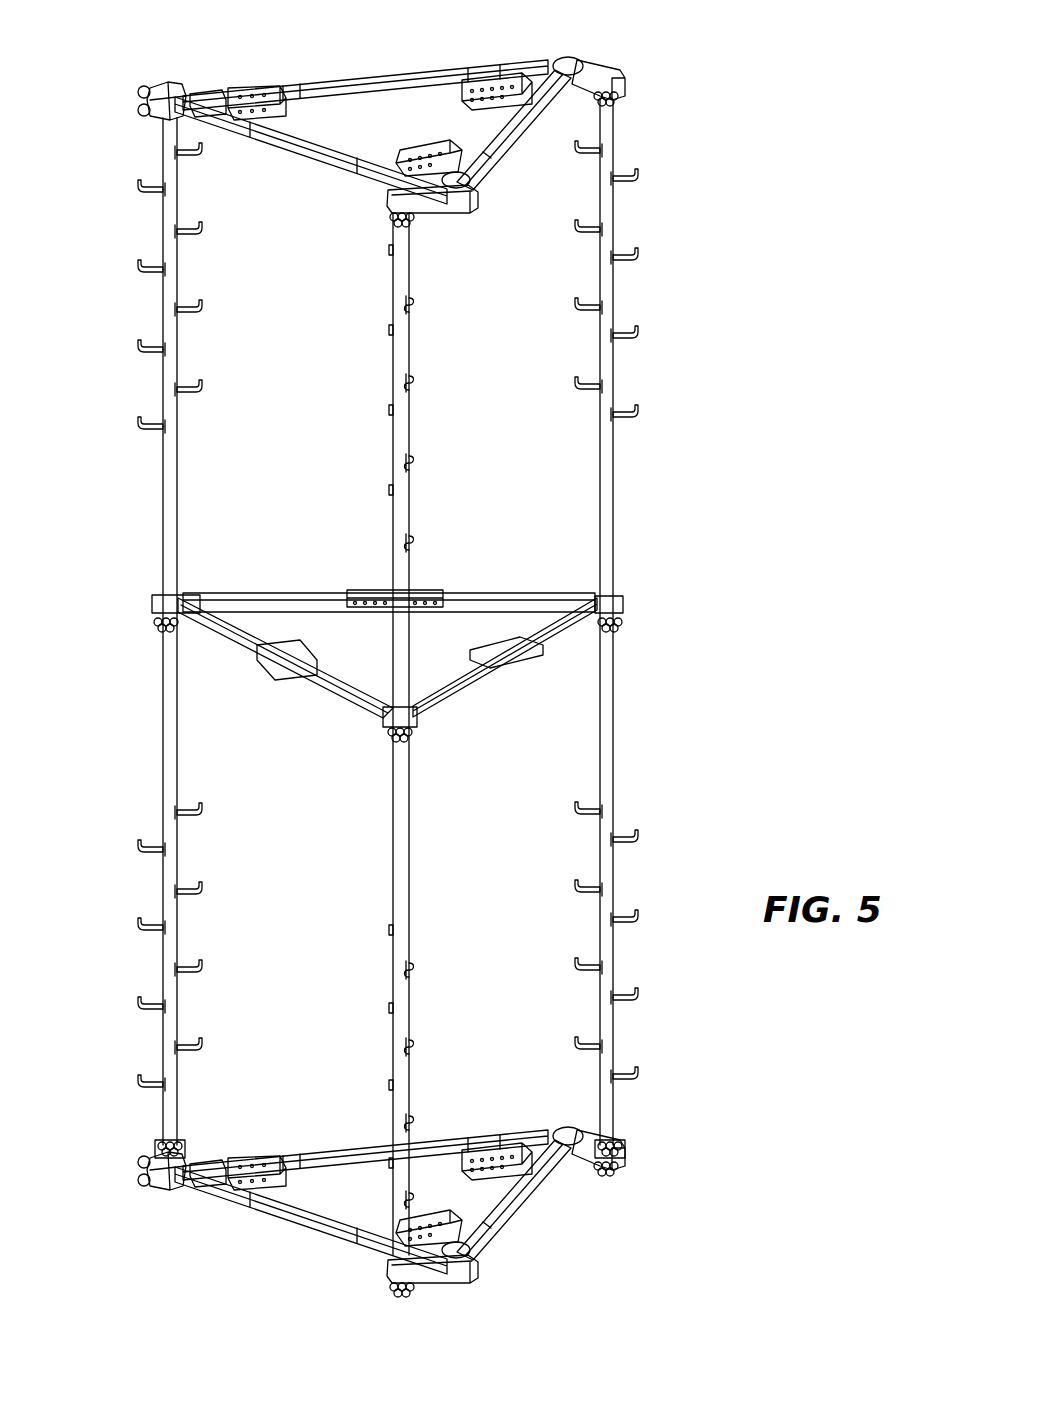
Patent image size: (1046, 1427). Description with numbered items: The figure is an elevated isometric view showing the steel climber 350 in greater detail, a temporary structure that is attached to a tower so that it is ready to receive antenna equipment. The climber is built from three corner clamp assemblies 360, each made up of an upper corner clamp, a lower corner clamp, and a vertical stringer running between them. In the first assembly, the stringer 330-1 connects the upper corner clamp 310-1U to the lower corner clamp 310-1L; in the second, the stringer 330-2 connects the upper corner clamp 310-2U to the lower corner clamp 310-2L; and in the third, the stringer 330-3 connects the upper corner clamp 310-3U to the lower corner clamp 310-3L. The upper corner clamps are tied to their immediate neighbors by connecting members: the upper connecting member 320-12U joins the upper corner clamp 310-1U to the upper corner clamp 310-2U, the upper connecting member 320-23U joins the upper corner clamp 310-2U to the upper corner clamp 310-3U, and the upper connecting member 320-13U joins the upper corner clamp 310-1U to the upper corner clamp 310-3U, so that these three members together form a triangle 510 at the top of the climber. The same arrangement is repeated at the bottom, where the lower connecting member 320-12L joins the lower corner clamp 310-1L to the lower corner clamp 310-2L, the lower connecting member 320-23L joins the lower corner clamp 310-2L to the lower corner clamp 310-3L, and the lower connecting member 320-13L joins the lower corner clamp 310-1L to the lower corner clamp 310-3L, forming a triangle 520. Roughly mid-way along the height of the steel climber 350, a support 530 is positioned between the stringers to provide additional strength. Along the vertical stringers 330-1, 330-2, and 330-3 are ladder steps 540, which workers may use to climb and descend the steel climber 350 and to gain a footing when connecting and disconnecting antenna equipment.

The steel climber 350 is at (722, 143).
The corner clamp assembly 360 is at (88, 712).
The triangle 510 is at (364, 129).
The triangle 520 is at (389, 1196).
The support 530 is at (522, 684).
The ladder steps 540 is at (200, 310).
The stringer 330-1 is at (165, 482).
The stringer 330-2 is at (617, 456).
The stringer 330-3 is at (405, 506).
The upper corner clamp 310-1U is at (162, 94).
The upper corner clamp 310-2U is at (567, 58).
The upper corner clamp 310-3U is at (465, 200).
The upper connecting member 320-12U is at (398, 76).
The upper connecting member 320-13U is at (293, 143).
The upper connecting member 320-23U is at (517, 120).
The lower corner clamp 310-1L is at (152, 1187).
The lower corner clamp 310-2L is at (600, 1150).
The lower corner clamp 310-3L is at (470, 1270).
The lower connecting member 320-12L is at (353, 1146).
The lower connecting member 320-13L is at (293, 1213).
The lower connecting member 320-23L is at (513, 1195).